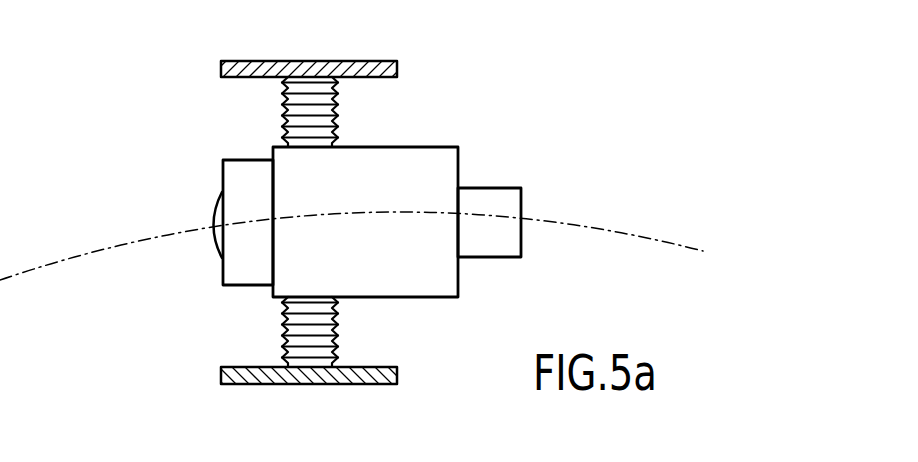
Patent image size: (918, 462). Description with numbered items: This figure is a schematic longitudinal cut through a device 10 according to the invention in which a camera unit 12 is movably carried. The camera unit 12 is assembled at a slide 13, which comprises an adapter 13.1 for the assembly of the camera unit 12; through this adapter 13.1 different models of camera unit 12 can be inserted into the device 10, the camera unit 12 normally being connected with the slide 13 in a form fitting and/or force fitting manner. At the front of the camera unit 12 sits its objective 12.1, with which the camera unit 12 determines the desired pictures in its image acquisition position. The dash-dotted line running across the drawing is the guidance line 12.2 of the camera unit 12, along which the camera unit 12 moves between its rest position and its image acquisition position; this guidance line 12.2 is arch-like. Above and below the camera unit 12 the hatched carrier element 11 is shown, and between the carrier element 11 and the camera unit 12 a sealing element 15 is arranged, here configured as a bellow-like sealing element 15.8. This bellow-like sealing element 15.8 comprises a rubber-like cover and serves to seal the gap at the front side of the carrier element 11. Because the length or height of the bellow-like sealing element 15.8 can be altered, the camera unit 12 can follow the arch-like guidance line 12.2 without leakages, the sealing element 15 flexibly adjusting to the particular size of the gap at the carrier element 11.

The device 10 is at (165, 152).
The carrier element 11 is at (340, 62).
The camera unit 12 is at (479, 178).
The objective 12.1 is at (213, 236).
The guidance line 12.2 is at (625, 232).
The slide 13 is at (479, 178).
The adapter 13.1 is at (432, 170).
The sealing element 15 is at (369, 222).
The bellow-like sealing element 15.8 is at (322, 107).